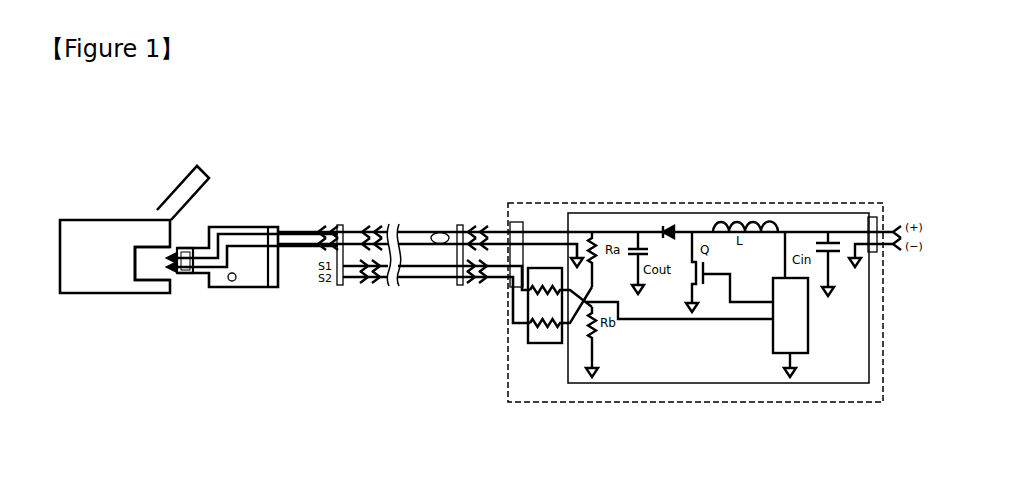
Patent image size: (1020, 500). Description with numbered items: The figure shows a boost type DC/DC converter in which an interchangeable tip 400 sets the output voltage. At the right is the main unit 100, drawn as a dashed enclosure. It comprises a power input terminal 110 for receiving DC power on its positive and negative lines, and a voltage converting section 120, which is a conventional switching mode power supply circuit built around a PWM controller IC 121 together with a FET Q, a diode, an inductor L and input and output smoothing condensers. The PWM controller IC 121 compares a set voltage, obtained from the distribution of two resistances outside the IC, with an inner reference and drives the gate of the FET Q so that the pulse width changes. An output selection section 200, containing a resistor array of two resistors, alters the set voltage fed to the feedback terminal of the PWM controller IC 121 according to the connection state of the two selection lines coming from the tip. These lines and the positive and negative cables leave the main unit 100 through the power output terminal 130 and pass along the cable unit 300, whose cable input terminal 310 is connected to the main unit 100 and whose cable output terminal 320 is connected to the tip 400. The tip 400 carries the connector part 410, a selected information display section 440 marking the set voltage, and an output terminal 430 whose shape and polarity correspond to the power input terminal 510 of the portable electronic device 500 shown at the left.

The main unit 100 is at (573, 203).
The power input terminal 110 is at (877, 254).
The voltage converting section 120 is at (713, 388).
The PWM controller IC 121 is at (812, 319).
The power output terminal 130 is at (515, 221).
The output selection section 200 is at (540, 345).
The cable unit 300 is at (416, 218).
The cable input terminal 310 is at (460, 286).
The cable output terminal 320 is at (341, 286).
The tip 400 is at (251, 218).
The adapter connector 410 is at (273, 288).
The output terminal of the tip 430 is at (190, 274).
The selected information display section 440 is at (232, 282).
The portable electronic device 500 is at (98, 220).
The power input terminal of the portable electronic device 510 is at (148, 268).